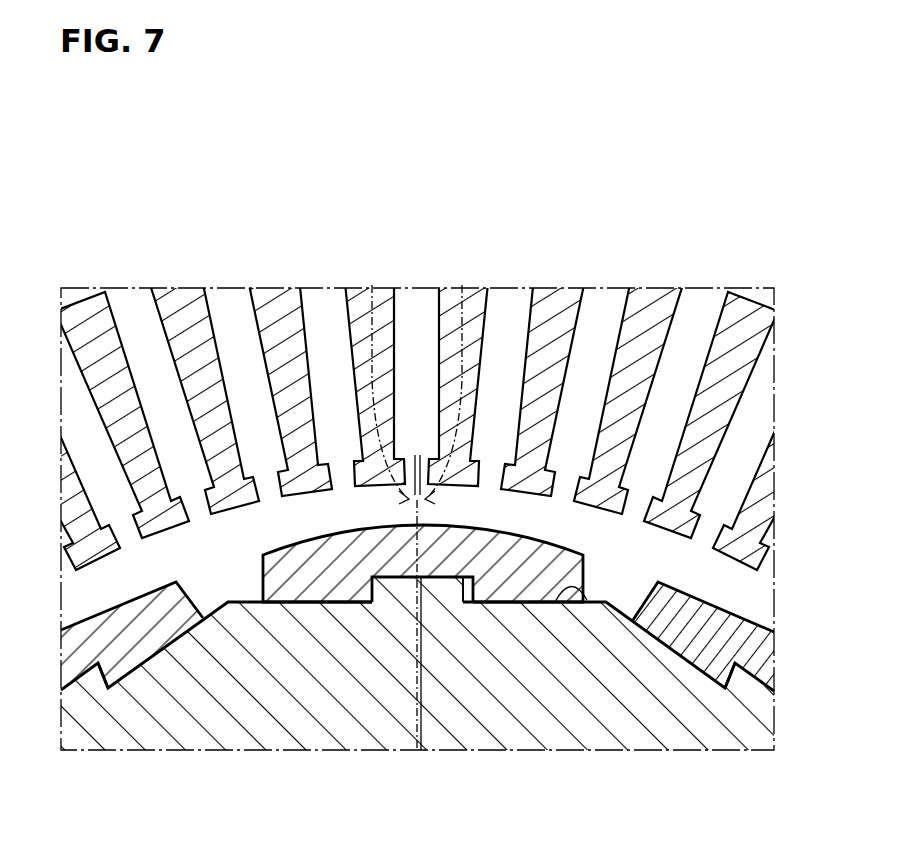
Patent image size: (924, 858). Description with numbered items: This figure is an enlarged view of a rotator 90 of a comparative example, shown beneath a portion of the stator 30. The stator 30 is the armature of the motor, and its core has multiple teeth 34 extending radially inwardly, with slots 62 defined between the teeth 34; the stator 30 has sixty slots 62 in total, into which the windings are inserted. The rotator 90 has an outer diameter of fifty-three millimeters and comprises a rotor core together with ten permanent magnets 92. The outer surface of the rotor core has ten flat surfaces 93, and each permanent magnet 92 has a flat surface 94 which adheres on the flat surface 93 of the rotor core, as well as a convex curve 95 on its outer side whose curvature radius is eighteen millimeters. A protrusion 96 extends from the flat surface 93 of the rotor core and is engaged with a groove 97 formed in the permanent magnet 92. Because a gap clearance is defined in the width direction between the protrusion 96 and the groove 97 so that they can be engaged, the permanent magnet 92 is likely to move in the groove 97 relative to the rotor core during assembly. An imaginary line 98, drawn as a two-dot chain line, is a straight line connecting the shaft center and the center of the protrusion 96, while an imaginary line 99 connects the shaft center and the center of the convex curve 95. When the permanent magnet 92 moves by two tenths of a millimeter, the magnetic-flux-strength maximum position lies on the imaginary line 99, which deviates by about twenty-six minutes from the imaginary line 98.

The stator 30 is at (462, 408).
The teeth 34 is at (356, 410).
The slots 62 is at (417, 313).
The imaginary line 98 is at (372, 285).
The imaginary line 99 is at (463, 285).
The convex curve 95 is at (423, 517).
The groove 97 is at (421, 578).
The protrusion 96 is at (455, 588).
The rotator 90 is at (419, 700).
The permanent magnet 92 is at (70, 650).
The flat surface 93 is at (155, 650).
The flat surface 94 is at (137, 668).